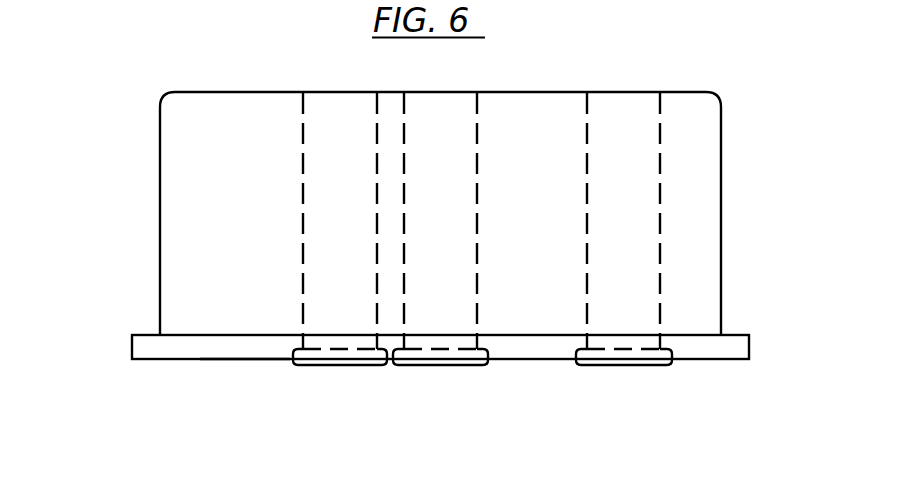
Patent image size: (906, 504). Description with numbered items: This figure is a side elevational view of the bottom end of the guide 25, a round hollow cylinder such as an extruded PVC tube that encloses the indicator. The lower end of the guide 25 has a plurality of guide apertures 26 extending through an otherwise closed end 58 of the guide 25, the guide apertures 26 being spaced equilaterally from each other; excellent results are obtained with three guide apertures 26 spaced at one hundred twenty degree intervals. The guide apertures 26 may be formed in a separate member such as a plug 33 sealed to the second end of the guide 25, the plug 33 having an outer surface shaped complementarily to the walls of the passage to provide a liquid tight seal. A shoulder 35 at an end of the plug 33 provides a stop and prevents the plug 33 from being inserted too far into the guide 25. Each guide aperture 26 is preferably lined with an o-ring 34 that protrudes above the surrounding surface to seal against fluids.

The guide 25 is at (136, 213).
The plug 33 is at (185, 155).
The shoulder 35 is at (137, 335).
The guide apertures 26 is at (630, 255).
The o-ring 34 is at (592, 367).
The closed end 58 is at (255, 348).